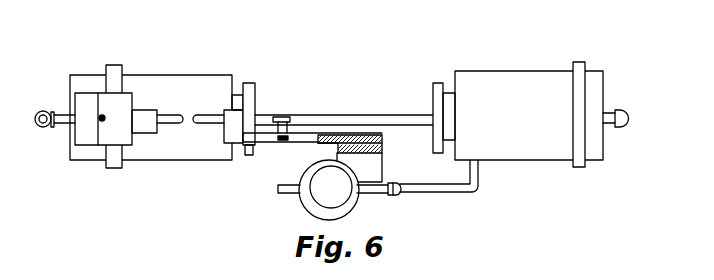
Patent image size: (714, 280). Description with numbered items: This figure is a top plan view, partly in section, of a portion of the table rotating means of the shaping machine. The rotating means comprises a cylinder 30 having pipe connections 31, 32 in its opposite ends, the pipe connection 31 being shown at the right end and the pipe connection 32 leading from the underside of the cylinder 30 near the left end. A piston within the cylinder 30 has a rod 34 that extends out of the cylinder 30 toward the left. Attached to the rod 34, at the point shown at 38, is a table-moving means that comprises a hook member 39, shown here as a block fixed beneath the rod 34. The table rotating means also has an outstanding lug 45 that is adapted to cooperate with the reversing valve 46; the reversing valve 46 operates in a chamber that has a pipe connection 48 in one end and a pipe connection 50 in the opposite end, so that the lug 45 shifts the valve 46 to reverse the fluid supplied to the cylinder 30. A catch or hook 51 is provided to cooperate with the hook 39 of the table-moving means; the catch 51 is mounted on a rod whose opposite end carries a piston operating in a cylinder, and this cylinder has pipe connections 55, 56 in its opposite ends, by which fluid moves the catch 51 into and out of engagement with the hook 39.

The cylinder 30 is at (516, 95).
The pipe connection 31 is at (607, 114).
The pipe connection 32 is at (479, 172).
The rod 34 is at (398, 116).
The attachment point 38 is at (284, 117).
The hook member 39 is at (367, 168).
The outstanding lug 45 is at (213, 122).
The reversing valve 46 is at (167, 122).
The pipe connection 48 is at (60, 120).
The pipe connection 50 is at (102, 121).
The catch 51 is at (327, 182).
The pipe connection 55 is at (288, 193).
The pipe connection 56 is at (368, 190).